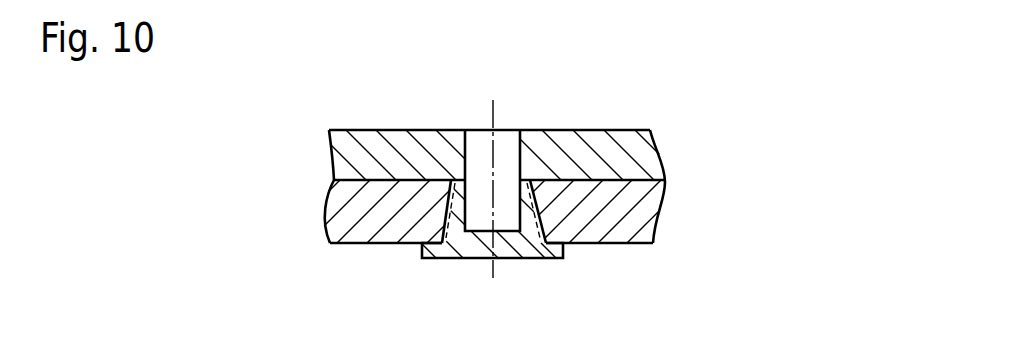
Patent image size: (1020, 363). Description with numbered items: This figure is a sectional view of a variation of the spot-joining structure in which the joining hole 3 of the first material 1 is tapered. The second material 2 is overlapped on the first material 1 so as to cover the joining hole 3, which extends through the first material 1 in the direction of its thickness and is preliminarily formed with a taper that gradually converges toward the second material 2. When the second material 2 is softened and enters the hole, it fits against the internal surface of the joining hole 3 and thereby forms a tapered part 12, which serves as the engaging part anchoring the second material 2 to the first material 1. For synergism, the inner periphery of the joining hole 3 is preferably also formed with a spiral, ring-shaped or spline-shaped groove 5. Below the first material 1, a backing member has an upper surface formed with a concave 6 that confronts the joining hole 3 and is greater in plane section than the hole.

The first material 1 is at (642, 215).
The second material 2 is at (640, 155).
The joining hole 3 is at (462, 240).
The groove 5 is at (523, 225).
The concave 6 is at (550, 238).
The tapered part 12 is at (512, 237).